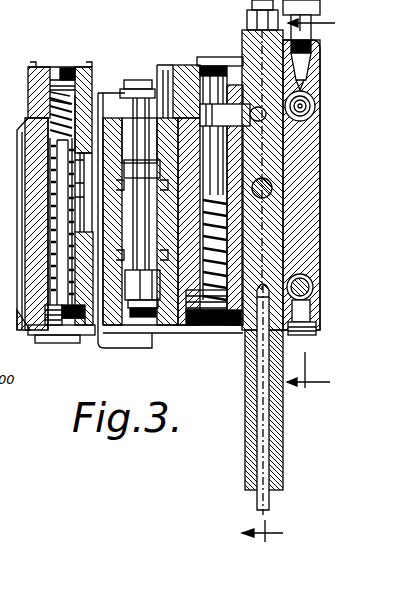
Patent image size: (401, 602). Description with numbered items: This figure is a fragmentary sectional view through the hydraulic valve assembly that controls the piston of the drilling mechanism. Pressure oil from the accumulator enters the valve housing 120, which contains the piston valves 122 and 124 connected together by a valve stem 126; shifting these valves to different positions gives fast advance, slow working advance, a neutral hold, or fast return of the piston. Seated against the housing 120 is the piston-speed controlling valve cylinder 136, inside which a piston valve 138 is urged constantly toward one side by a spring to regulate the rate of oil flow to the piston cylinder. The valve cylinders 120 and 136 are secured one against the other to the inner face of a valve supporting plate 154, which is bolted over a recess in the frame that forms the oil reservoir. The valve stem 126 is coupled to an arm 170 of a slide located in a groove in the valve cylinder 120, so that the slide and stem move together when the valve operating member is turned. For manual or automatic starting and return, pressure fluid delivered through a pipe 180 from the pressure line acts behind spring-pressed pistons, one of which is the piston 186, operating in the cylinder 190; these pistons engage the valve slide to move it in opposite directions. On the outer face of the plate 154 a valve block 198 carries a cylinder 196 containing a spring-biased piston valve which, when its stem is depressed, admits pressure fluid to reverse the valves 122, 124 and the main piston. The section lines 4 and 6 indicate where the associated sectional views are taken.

The spring-pressed piston 186 is at (62, 88).
The valve stem 126 is at (125, 107).
The arm 170 is at (128, 82).
The piston valve 122 is at (162, 128).
The piston-speed controlling valve cylinder 136 is at (178, 70).
The valve supporting plate 154 is at (252, 52).
The piston valve 138 is at (215, 168).
The valve block 198 is at (315, 233).
The cylinder 196 is at (312, 288).
The cylinder 190 is at (49, 334).
The pipe 180 is at (60, 334).
The valve housing 120 is at (163, 334).
The piston valve 124 is at (180, 326).
The section line 4- 4 is at (315, 205).
The section line 6- 6 is at (262, 540).